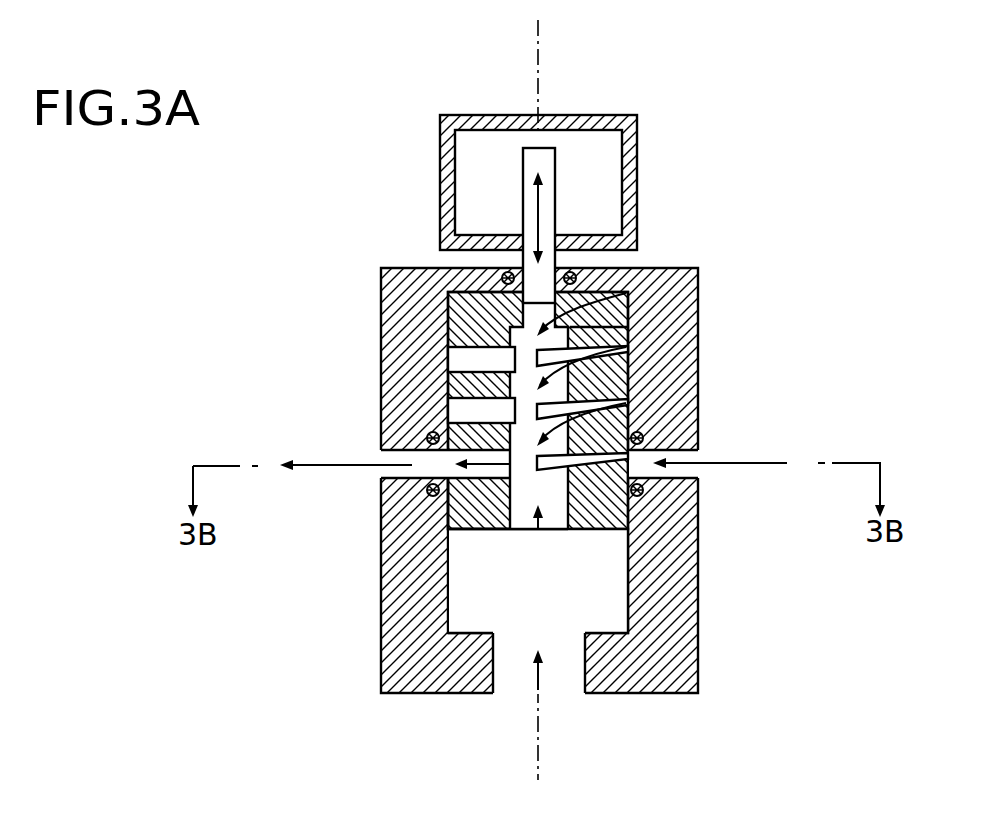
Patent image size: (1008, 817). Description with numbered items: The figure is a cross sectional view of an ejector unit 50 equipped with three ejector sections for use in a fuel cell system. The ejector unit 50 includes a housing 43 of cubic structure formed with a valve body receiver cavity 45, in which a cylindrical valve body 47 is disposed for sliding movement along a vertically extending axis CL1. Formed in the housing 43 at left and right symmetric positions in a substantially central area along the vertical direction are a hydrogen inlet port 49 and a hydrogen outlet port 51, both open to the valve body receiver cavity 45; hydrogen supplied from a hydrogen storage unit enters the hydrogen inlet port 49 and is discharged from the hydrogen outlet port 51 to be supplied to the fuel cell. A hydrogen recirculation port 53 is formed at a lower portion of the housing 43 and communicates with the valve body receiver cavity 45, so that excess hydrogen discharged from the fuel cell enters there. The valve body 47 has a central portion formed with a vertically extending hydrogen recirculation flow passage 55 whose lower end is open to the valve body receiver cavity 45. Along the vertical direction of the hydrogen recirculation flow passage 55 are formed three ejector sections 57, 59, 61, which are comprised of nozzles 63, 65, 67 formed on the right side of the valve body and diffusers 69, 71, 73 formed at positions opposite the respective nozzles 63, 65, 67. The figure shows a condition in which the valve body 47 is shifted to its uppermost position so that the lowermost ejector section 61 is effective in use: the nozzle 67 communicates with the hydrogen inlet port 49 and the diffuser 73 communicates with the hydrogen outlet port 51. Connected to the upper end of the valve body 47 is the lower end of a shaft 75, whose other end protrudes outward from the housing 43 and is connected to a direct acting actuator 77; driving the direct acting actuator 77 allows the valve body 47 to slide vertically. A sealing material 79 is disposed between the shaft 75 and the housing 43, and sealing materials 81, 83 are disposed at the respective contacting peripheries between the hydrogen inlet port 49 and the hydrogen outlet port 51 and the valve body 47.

The housing 43 is at (698, 595).
The valve body receiver cavity 45 is at (600, 612).
The valve body 47 is at (630, 340).
The hydrogen inlet port 49 is at (700, 456).
The ejector unit 50 is at (727, 106).
The hydrogen outlet port 51 is at (381, 458).
The hydrogen recirculation port 53 is at (570, 678).
The hydrogen recirculation flow passage 55 is at (510, 530).
The ejector section 57 is at (598, 300).
The ejector section 59 is at (600, 357).
The ejector section 61 is at (600, 412).
The nozzle 63 is at (620, 327).
The nozzle 65 is at (600, 388).
The nozzle 67 is at (600, 447).
The diffuser 69 is at (455, 330).
The diffuser 71 is at (452, 408).
The diffuser 73 is at (448, 527).
The shaft 75 is at (556, 170).
The direct acting actuator 77 is at (474, 115).
The sealing material 79 is at (500, 277).
The sealing material 81 is at (645, 493).
The sealing material 83 is at (425, 492).
The axis CL1 is at (541, 27).